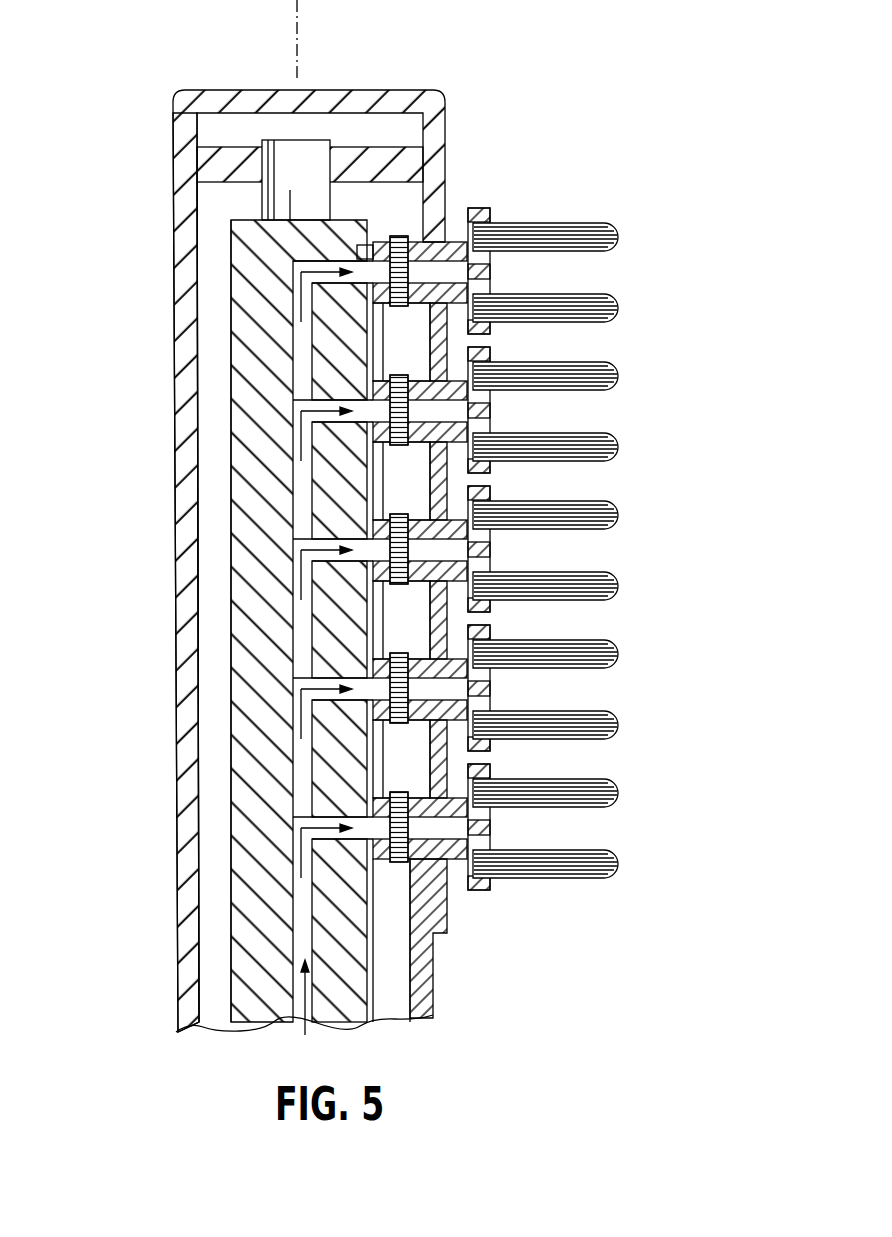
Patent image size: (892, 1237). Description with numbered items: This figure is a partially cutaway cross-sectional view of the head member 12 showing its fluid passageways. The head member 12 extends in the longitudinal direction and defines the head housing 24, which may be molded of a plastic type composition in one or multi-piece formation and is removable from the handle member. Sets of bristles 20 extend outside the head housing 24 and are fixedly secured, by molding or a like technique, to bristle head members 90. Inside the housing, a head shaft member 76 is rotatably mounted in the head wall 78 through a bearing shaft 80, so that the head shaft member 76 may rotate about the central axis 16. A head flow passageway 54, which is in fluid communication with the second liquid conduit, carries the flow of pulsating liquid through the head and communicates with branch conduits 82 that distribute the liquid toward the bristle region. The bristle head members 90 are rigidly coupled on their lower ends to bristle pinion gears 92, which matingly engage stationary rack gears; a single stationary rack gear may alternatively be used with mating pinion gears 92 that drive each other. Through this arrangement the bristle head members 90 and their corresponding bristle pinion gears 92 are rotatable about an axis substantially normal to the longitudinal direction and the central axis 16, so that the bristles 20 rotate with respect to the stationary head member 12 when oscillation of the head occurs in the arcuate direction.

The head member 12 is at (166, 585).
The central axis 16 is at (299, 38).
The bristles 20 is at (623, 222).
The head housing 24 is at (182, 507).
The head flow passageway 54 is at (237, 852).
The head shaft member 76 is at (238, 366).
The head wall 78 is at (366, 152).
The bearing shaft 80 is at (294, 153).
The branch conduits 82 is at (357, 264).
The bristle head members 90 is at (478, 207).
The bristle pinion gears 92 is at (399, 514).